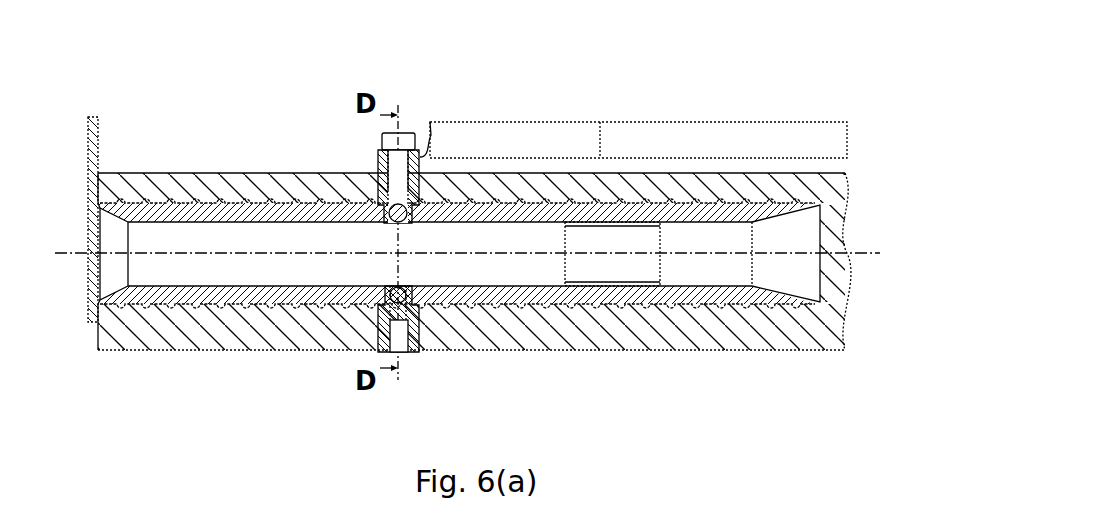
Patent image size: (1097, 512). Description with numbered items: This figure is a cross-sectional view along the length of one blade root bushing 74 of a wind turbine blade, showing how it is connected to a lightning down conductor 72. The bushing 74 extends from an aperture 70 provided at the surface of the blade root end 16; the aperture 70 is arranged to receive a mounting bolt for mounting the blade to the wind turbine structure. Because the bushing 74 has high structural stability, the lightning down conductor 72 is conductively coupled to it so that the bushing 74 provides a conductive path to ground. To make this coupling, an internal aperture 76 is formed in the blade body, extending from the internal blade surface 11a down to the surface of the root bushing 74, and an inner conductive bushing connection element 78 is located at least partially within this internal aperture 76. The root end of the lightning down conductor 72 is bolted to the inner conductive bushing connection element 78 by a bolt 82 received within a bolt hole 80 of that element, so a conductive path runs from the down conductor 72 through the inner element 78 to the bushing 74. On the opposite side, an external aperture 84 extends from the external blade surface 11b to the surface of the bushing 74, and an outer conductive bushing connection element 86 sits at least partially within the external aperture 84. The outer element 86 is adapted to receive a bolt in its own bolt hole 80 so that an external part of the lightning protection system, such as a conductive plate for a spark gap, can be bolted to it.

The root end 16 is at (88, 193).
The aperture 70 is at (90, 267).
The internal blade surface 11a is at (290, 173).
The external blade surface 11b is at (302, 352).
The lightning down conductor 72 is at (650, 133).
The blade root bushing 74 is at (597, 293).
The internal aperture 76 is at (372, 193).
The inner conductive bushing connection element 78 is at (358, 174).
The bolt hole 80 is at (395, 333).
The bolt 82 is at (407, 133).
The external aperture 84 is at (400, 307).
The outer conductive bushing connection element 86 is at (414, 353).